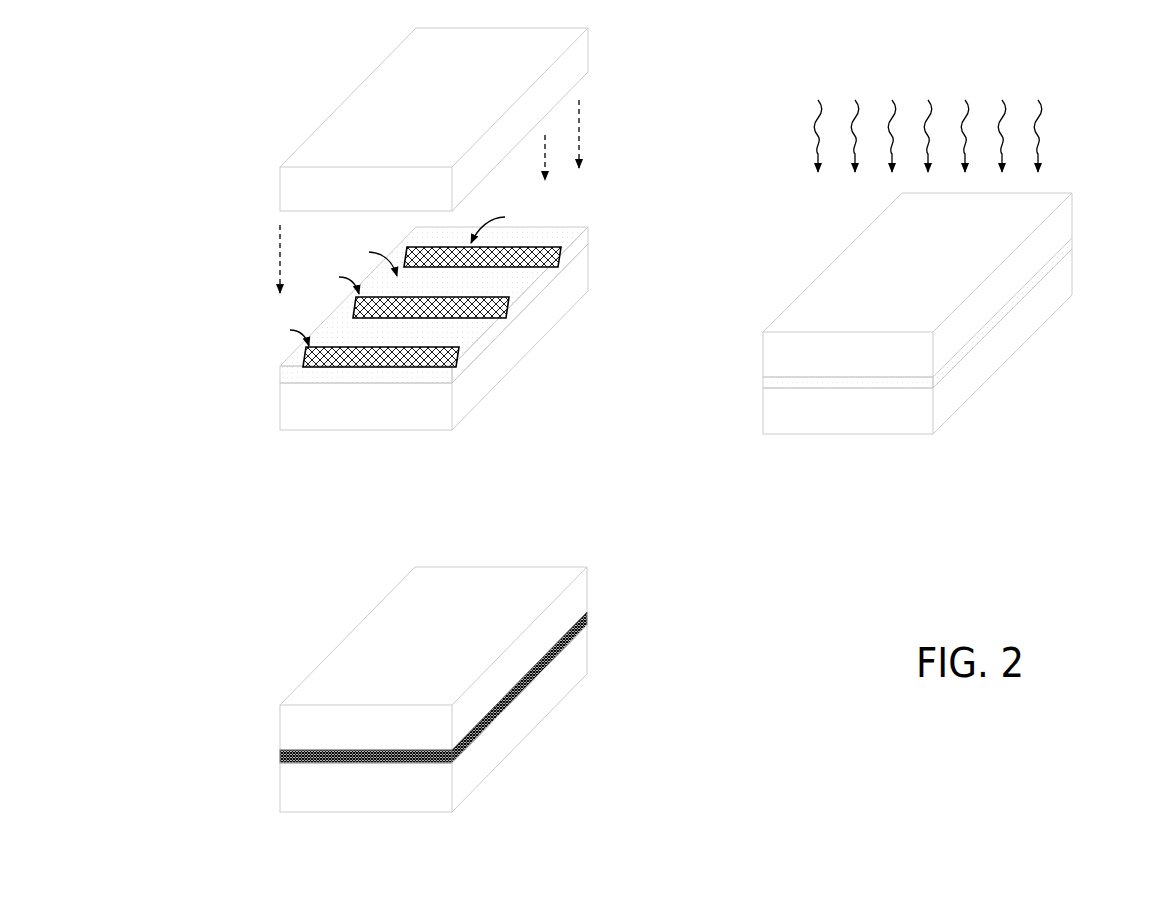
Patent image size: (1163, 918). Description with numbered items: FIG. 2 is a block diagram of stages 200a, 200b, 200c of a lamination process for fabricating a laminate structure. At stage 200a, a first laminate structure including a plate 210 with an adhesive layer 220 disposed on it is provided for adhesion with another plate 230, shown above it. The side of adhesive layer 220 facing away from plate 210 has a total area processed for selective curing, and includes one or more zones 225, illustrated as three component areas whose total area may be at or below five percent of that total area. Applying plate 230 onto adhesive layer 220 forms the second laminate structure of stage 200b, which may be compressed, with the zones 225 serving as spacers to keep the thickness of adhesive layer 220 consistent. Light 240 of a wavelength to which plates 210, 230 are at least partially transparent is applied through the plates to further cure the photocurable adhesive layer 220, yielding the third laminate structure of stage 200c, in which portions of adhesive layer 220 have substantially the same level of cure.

The stage 200a is at (490, 425).
The stage 200b is at (971, 425).
The stage 200c is at (489, 798).
The plate 210 is at (445, 421).
The adhesive layer 220 is at (1127, 226).
The zones 225 is at (519, 275).
The plate 230 is at (445, 202).
The light 240 is at (1153, 127).